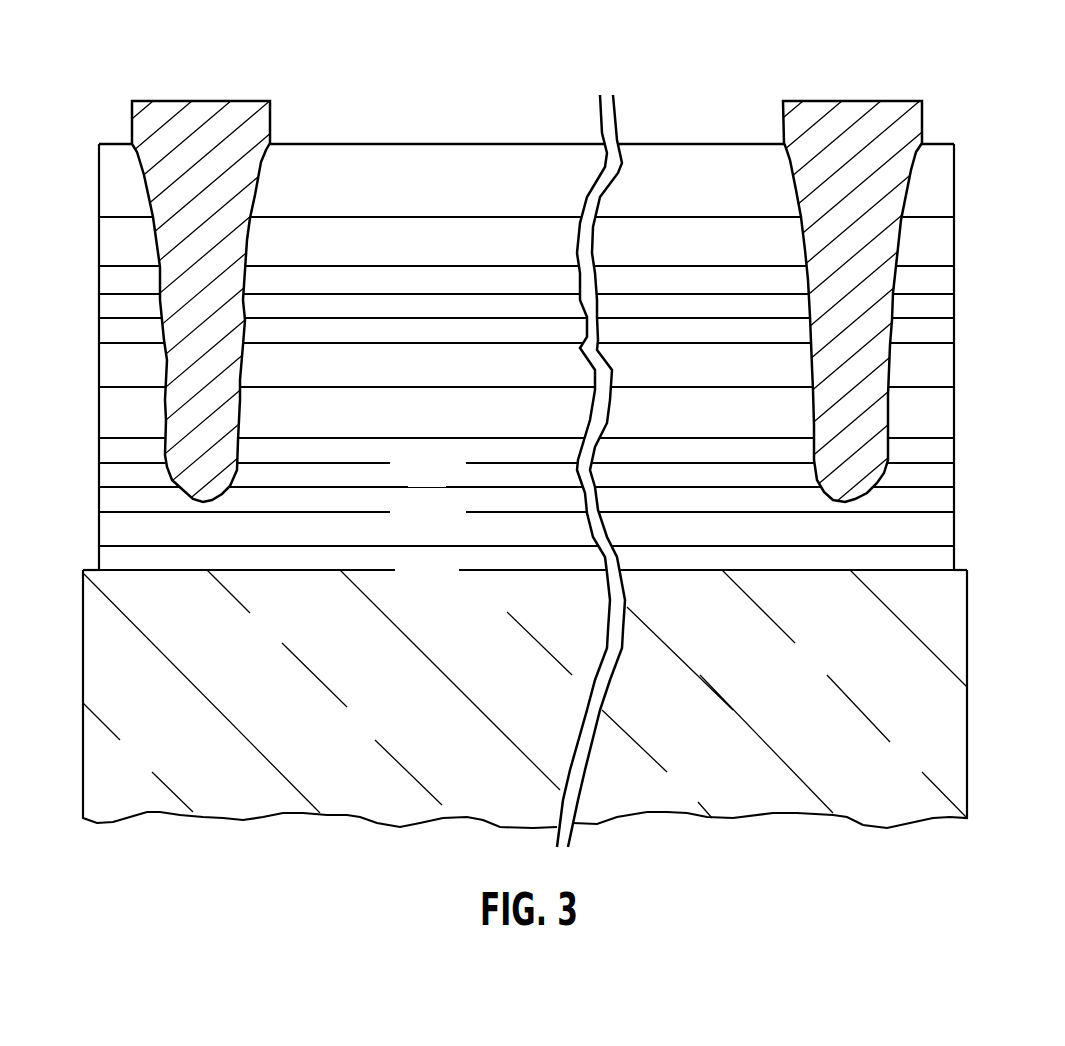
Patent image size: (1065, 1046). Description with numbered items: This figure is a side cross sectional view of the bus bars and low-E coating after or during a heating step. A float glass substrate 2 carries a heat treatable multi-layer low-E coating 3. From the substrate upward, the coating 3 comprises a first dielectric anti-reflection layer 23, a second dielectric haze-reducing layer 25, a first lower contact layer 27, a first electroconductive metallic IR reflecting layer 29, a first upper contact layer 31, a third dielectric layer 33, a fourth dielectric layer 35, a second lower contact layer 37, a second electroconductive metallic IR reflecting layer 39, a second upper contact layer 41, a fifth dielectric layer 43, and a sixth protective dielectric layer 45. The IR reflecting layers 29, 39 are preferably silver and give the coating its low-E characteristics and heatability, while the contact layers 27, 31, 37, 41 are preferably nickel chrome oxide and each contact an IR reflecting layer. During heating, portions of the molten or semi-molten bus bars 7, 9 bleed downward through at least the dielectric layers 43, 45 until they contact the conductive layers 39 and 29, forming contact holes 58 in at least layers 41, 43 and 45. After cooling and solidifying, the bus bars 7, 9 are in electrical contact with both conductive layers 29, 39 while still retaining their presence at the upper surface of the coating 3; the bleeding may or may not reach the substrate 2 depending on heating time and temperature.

The substrate 2 is at (935, 711).
The low-E coating 3 is at (963, 563).
The bus bar 7 is at (160, 113).
The bus bar 9 is at (857, 113).
The first dielectric anti-reflection layer 23 is at (913, 562).
The second dielectric haze-reducing layer 25 is at (798, 527).
The first lower contact layer 27 is at (938, 502).
The first electroconductive metallic IR reflecting layer 29 is at (940, 477).
The first upper contact layer 31 is at (938, 455).
The third dielectric layer 33 is at (942, 417).
The fourth dielectric layer 35 is at (757, 370).
The second lower contact layer 37 is at (690, 333).
The second electroconductive metallic IR reflecting layer 39 is at (663, 310).
The second upper contact layer 41 is at (639, 283).
The fifth dielectric layer 43 is at (525, 243).
The sixth protective dielectric layer 45 is at (355, 160).
The contact holes 58 is at (253, 243).